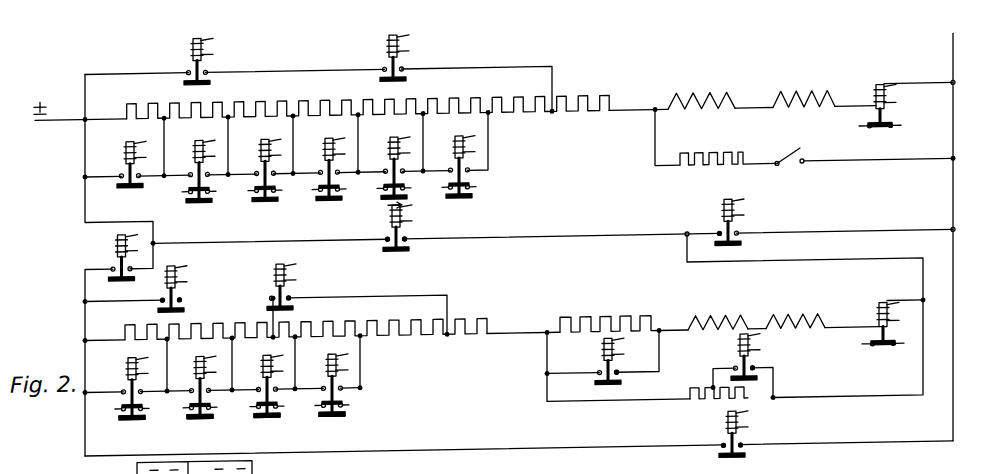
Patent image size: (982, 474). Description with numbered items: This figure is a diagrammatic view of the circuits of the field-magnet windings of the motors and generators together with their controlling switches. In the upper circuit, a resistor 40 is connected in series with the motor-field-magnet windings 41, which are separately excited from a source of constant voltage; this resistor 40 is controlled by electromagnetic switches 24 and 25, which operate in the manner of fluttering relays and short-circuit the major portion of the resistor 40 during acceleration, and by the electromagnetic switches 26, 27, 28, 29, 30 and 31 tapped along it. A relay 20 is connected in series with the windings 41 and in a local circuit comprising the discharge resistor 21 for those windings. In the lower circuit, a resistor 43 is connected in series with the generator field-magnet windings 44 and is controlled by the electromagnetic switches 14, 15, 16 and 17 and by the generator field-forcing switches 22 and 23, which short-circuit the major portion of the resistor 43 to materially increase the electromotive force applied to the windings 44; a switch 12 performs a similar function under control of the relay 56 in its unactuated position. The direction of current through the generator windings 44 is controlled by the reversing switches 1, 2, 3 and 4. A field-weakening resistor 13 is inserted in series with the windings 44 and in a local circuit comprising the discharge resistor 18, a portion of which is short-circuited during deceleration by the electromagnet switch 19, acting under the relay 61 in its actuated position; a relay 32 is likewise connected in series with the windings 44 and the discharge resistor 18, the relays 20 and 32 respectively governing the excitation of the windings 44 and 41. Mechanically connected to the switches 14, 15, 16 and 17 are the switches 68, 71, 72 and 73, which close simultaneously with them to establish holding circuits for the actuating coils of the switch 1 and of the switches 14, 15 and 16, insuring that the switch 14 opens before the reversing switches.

The electromagnetic switch 1 is at (113, 268).
The electromagnetic switch 2 is at (745, 470).
The electromagnetic switch 3 is at (742, 257).
The electromagnetic switch 4 is at (407, 258).
The switch 12 is at (619, 393).
The field-weakening resistor 13 is at (613, 327).
The electromagnetic switch 14 is at (117, 411).
The electromagnetic switch 15 is at (190, 411).
The electromagnetic switch 16 is at (257, 411).
The electromagnetic switch 17 is at (342, 411).
The discharge resistor 18 is at (690, 412).
The electromagnet switch 19 is at (756, 389).
The relay 20 is at (892, 140).
The discharge resistor 21 is at (745, 169).
The electromagnetic switch 22 is at (182, 305).
The electromagnetic switch 23 is at (290, 305).
The electromagnetic switch 24 is at (207, 80).
The electromagnetic switch 25 is at (403, 78).
The electromagnetic switch 26 is at (476, 193).
The electromagnetic switch 27 is at (411, 194).
The electromagnetic switch 28 is at (346, 195).
The electromagnetic switch 29 is at (282, 195).
The electromagnetic switch 30 is at (216, 195).
The electromagnetic switch 31 is at (142, 190).
The relay 32 is at (894, 358).
The resistor 40 is at (305, 109).
The motor-field-magnet windings 41 is at (775, 104).
The resistor 43 is at (246, 326).
The generator field-magnet windings 44 is at (786, 329).
The relay 56 is at (141, 468).
The relay 61 is at (233, 467).
The switch 68 is at (135, 422).
The switch 71 is at (204, 422).
The switch 72 is at (270, 422).
The switch 73 is at (338, 422).